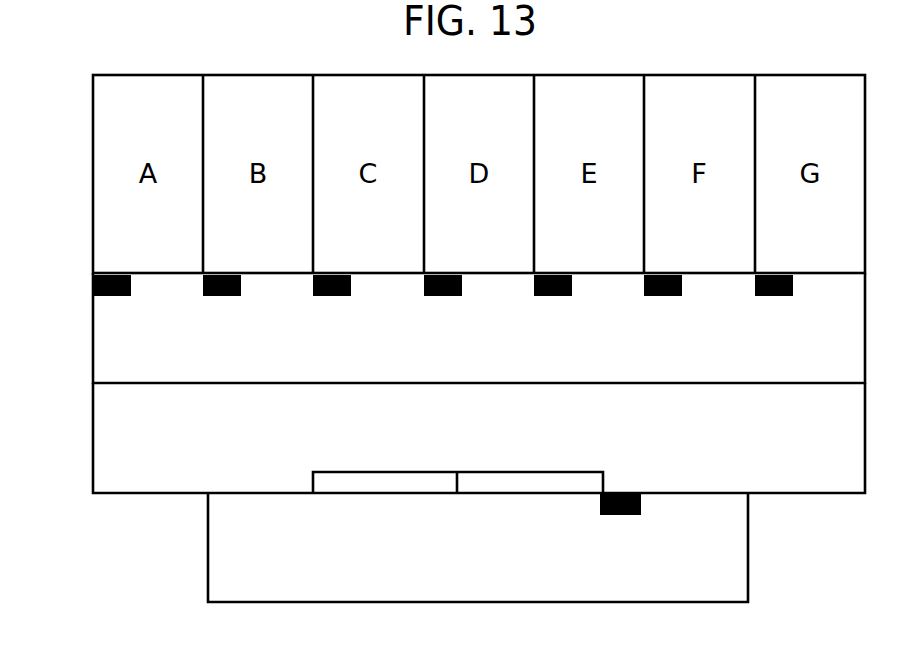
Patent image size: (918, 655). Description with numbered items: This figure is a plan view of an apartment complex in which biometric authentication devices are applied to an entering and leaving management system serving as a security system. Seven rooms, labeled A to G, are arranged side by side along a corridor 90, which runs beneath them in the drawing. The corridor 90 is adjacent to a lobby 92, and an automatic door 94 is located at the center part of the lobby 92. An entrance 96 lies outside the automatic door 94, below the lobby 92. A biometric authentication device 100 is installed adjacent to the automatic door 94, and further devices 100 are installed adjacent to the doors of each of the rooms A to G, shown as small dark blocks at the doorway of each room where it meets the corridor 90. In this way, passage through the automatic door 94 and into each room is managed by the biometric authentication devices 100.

The corridor 90 is at (120, 366).
The lobby 92 is at (120, 452).
The automatic door 94 is at (480, 472).
The entrance 96 is at (222, 560).
The biometric authentication device 100 is at (462, 426).